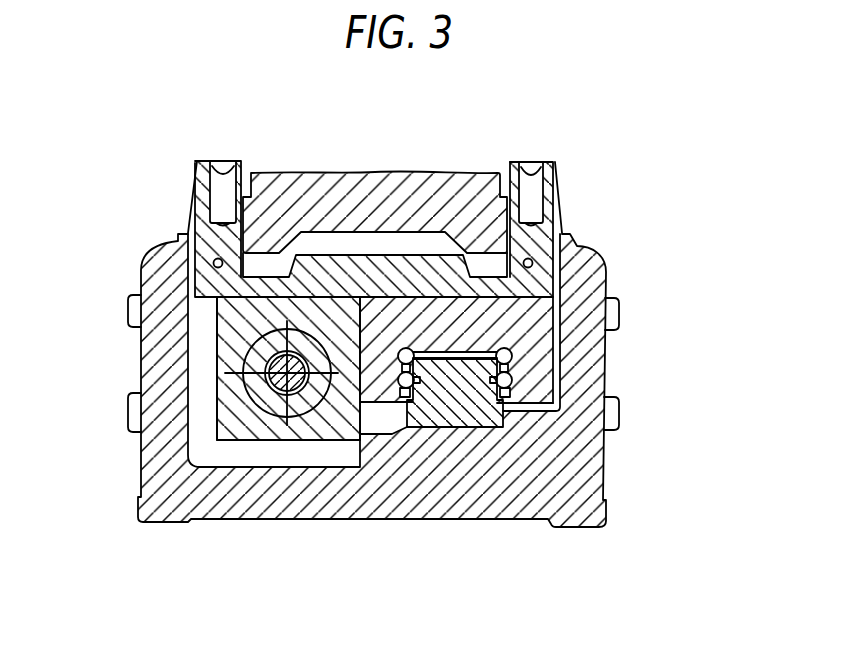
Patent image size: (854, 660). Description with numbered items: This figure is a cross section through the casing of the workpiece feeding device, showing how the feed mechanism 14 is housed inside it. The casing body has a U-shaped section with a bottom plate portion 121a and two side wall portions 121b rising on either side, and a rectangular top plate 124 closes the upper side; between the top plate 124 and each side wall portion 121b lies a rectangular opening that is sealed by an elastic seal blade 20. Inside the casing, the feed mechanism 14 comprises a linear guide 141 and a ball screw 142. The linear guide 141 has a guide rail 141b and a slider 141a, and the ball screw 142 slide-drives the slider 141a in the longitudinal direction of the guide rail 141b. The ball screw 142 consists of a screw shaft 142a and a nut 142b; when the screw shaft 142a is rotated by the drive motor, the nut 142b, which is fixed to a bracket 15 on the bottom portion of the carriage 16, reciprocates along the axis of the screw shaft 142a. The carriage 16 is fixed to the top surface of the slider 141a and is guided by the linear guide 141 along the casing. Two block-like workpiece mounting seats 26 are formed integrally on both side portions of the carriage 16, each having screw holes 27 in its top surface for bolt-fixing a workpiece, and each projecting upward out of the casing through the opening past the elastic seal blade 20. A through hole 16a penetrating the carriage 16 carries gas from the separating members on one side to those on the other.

The feed mechanism 14 is at (212, 461).
The bracket 15 is at (228, 413).
The carriage 16 is at (331, 266).
The through hole 16a is at (213, 262).
The elastic seal blade 20 is at (188, 213).
The workpiece mounting seat 26 is at (196, 176).
The screw hole 27 is at (221, 170).
The bottom plate portion 121a is at (400, 505).
The side wall portion 121b is at (148, 403).
The top plate 124 is at (373, 182).
The linear guide 141 is at (560, 380).
The slider 141a is at (543, 367).
The guide rail 141b is at (500, 410).
The ball screw 142 is at (270, 473).
The screw shaft 142a is at (303, 390).
The nut 142b is at (248, 398).